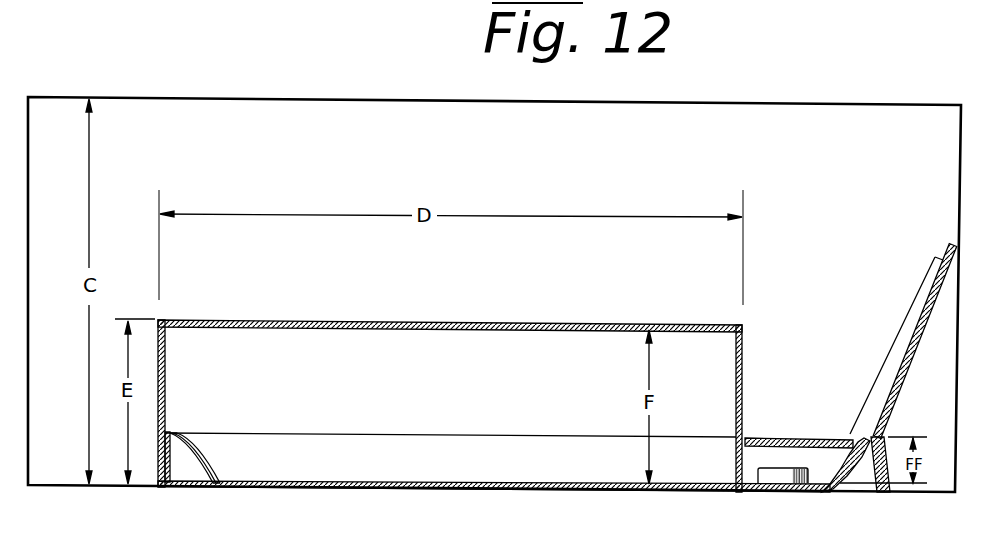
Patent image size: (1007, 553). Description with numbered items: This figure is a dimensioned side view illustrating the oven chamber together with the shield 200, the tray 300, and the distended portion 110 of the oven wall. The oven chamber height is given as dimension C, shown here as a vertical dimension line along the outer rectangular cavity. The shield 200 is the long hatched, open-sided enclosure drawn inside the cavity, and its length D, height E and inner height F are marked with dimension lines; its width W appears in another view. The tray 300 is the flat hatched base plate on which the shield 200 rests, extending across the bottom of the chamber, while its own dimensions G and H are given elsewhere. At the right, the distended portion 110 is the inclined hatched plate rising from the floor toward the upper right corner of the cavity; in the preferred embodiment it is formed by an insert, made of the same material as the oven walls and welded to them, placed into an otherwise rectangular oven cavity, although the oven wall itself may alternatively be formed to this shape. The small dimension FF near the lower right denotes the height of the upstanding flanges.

The shield 200 is at (443, 321).
The tray 300 is at (417, 489).
The distended portion of the oven wall 110 is at (921, 340).